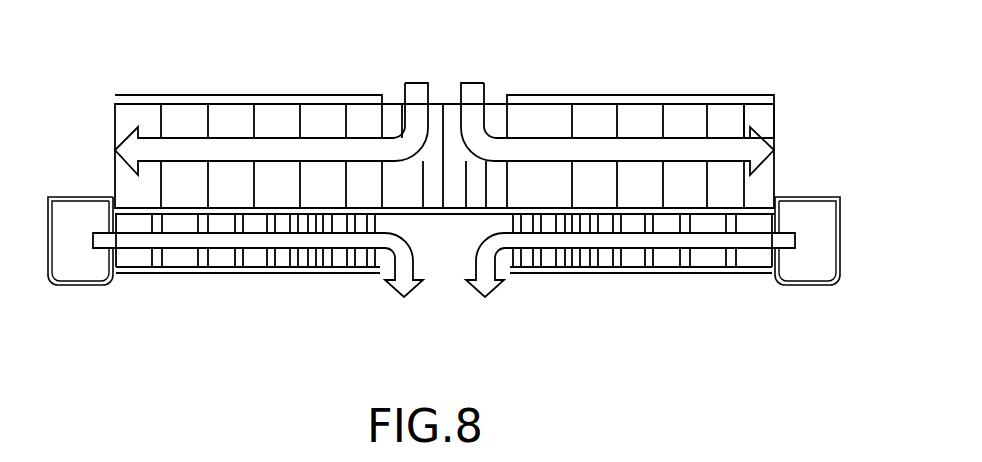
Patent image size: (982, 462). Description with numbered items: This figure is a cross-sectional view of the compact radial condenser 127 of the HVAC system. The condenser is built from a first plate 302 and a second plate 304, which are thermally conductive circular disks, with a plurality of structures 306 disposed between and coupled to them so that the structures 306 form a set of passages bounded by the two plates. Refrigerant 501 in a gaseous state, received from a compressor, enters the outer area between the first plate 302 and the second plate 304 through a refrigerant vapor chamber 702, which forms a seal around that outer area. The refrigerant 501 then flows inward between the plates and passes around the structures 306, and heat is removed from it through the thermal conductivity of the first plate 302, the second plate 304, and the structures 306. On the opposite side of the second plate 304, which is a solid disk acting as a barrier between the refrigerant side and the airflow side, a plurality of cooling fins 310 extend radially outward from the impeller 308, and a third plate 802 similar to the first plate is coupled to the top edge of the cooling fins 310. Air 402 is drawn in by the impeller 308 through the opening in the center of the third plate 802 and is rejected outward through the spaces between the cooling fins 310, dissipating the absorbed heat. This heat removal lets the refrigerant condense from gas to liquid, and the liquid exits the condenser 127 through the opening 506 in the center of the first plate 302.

The compact radial condenser 127 is at (277, 316).
The air 402 is at (413, 90).
The impeller 308 is at (495, 110).
The third plate 802 is at (603, 100).
The plurality of cooling fins 310 is at (747, 117).
The second plate 304 is at (768, 207).
The plurality of structures 306 is at (760, 255).
The opening 506 is at (460, 283).
The first plate 302 is at (743, 268).
The refrigerant 501 is at (150, 240).
The refrigerant vapor chamber 702 is at (823, 247).